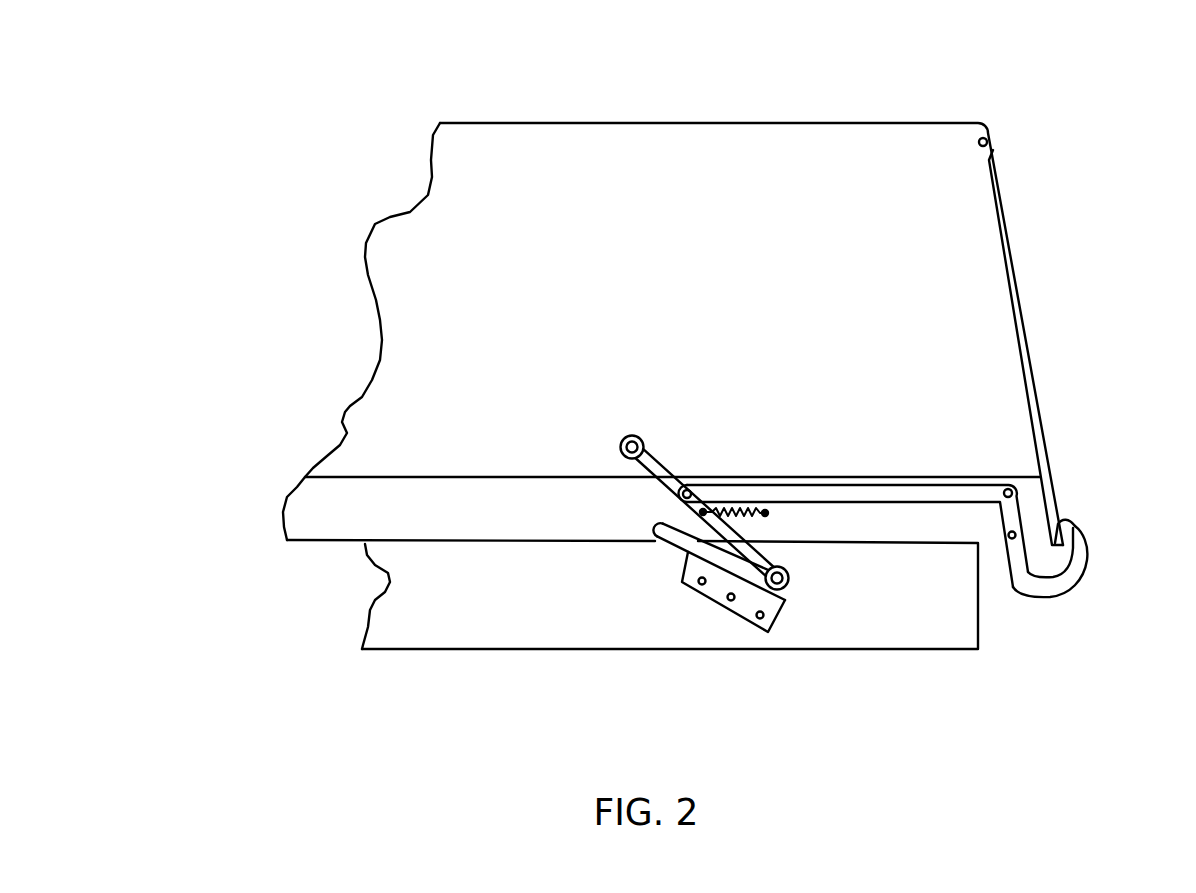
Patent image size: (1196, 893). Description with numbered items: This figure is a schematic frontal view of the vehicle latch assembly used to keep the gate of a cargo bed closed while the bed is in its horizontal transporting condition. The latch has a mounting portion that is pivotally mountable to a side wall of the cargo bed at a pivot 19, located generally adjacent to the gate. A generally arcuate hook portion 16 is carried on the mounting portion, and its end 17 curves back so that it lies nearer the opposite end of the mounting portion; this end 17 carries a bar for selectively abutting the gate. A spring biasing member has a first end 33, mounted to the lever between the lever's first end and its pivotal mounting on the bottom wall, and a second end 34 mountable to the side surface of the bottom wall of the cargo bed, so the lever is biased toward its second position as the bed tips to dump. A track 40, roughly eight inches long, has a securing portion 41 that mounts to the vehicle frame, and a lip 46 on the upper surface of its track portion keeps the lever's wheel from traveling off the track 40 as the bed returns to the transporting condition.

The hook portion 16 is at (1077, 573).
The end of the hook portion 17 is at (1070, 517).
The pivot 19 is at (730, 534).
The first end of the biasing member 33 is at (712, 505).
The second end of the biasing member 34 is at (765, 513).
The track 40 is at (758, 616).
The securing portion 41 is at (680, 580).
The lip 46 is at (658, 526).